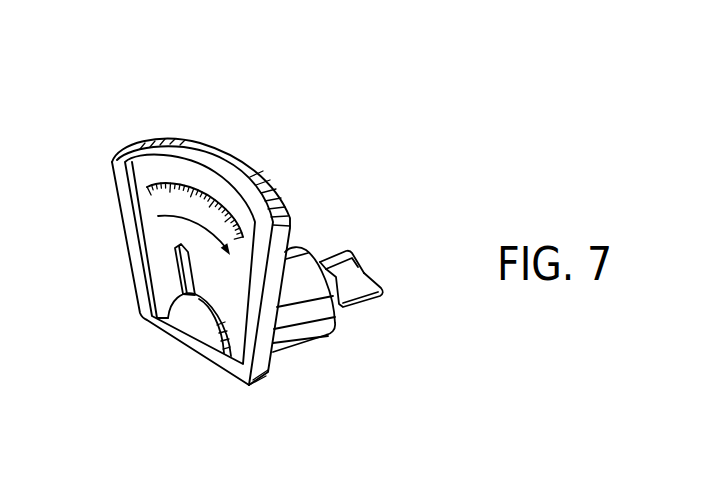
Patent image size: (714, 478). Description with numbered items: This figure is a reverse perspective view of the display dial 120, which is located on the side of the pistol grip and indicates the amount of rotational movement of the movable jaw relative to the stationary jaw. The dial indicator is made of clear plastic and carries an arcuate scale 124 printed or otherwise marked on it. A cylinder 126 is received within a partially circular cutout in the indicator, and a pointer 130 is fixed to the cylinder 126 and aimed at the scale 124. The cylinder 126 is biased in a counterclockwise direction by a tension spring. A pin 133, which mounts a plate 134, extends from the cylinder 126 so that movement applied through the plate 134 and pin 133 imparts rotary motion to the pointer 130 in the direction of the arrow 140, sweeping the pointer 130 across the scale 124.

The display dial 120 is at (316, 121).
The arcuate scale 124 is at (207, 195).
The cylinder 126 is at (299, 273).
The pointer 130 is at (176, 269).
The pin 133 is at (356, 256).
The plate 134 is at (360, 290).
The arrow 140 is at (158, 216).